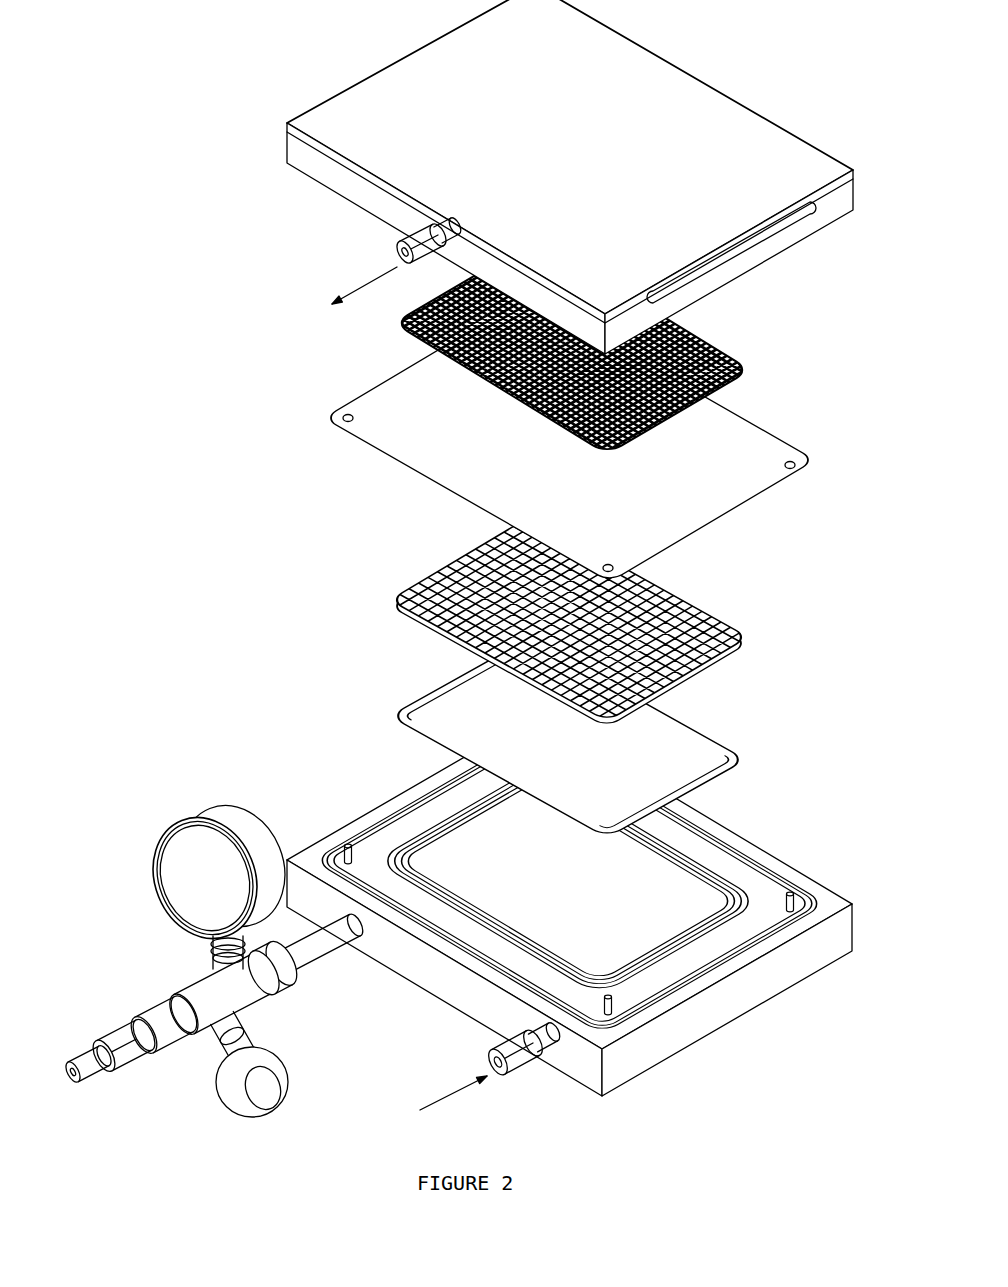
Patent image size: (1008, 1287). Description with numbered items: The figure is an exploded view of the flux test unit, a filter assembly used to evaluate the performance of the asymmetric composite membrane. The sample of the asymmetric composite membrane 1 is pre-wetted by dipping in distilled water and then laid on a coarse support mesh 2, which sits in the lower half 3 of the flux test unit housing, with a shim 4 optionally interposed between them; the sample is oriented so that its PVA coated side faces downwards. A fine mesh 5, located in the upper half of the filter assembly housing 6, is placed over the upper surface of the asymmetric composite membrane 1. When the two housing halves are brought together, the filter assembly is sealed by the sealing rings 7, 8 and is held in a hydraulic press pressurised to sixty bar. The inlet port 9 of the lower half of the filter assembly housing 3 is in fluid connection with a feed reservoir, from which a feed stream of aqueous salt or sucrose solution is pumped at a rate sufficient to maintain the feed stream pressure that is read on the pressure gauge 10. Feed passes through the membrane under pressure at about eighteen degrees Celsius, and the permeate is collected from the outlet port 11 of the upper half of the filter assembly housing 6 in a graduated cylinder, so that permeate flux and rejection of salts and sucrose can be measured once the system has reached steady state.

The asymmetric composite membrane 1 is at (770, 452).
The coarse support mesh 2 is at (700, 636).
The lower half of the flux test unit housing 3 is at (750, 855).
The shim 4 is at (693, 752).
The fine mesh 5 is at (733, 353).
The upper half of the filter assembly housing 6 is at (705, 104).
The sealing ring 7 is at (712, 940).
The sealing ring 8 is at (680, 995).
The inlet port 9 is at (525, 1065).
The pressure gauge 10 is at (175, 860).
The outlet port 11 is at (400, 256).